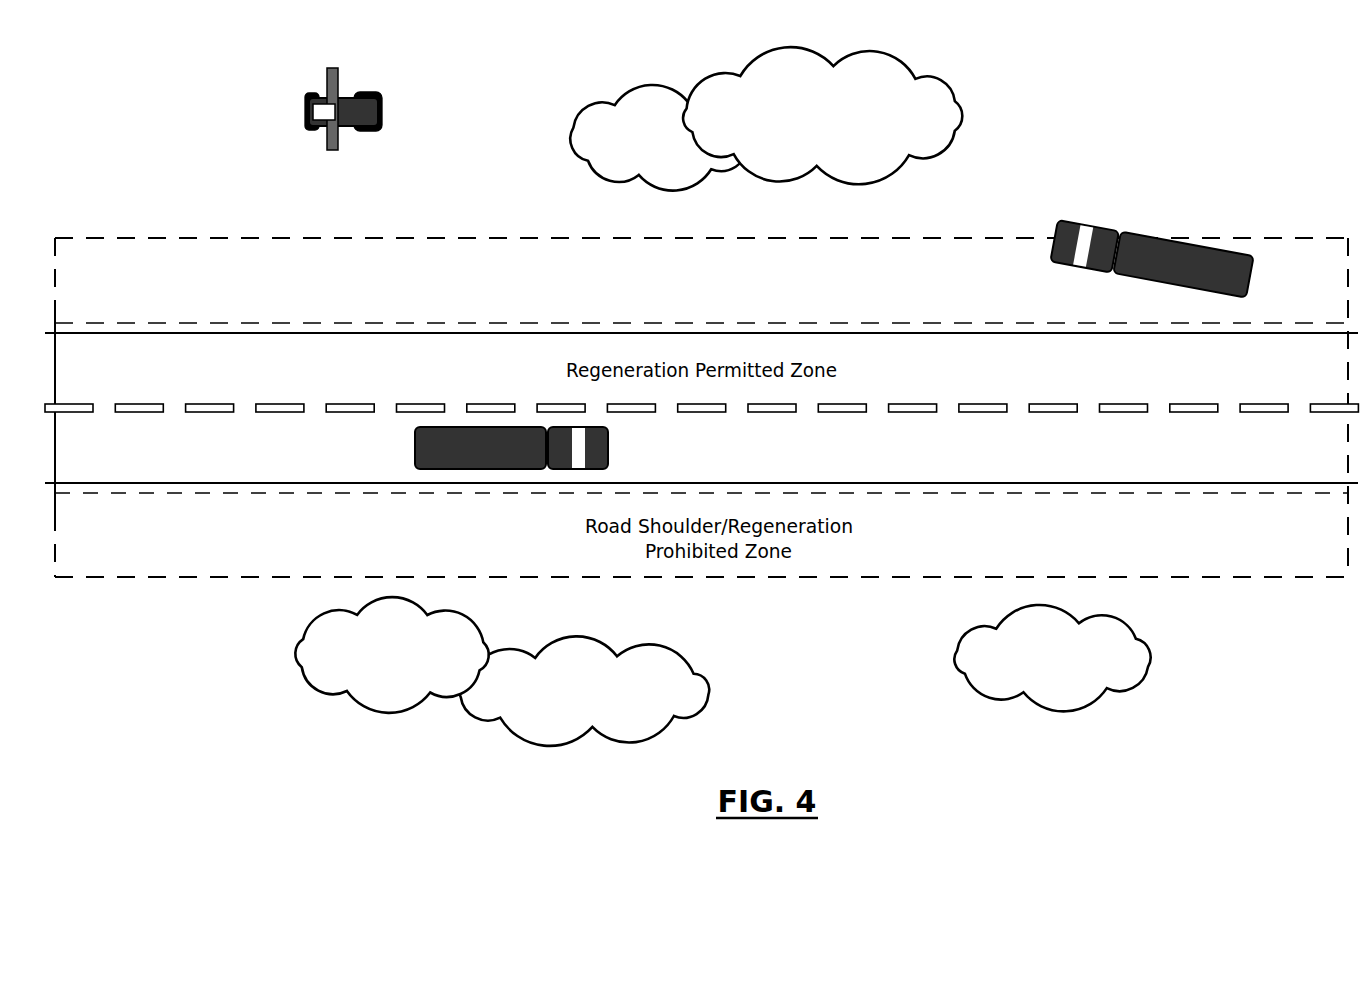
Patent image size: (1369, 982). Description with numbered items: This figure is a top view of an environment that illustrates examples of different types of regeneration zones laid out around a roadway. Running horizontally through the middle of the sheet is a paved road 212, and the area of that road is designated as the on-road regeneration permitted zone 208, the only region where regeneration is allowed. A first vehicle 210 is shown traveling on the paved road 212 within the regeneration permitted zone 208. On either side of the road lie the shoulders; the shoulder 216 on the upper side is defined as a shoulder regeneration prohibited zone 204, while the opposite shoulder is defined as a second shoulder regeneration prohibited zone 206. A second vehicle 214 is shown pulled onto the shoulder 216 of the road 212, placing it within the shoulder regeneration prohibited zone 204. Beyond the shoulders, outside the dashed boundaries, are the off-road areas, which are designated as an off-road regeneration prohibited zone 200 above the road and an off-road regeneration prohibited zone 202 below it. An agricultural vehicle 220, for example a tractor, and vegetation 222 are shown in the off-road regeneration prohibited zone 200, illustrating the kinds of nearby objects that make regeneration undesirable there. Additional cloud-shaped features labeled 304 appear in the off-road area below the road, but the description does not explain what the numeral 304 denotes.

The off-road regeneration prohibited zone 200 is at (580, 214).
The off-road regeneration prohibited zone 202 is at (622, 625).
The shoulder regeneration prohibited zone 204 is at (242, 238).
The shoulder regeneration prohibited zone 206 is at (158, 579).
The on-road regeneration permitted zone 208 is at (342, 317).
The first vehicle 210 is at (463, 427).
The paved road 212 is at (213, 331).
The second vehicle 214 is at (1155, 237).
The shoulder 216 is at (922, 304).
The agricultural vehicle 220 is at (308, 108).
The vegetation 222 is at (581, 107).
The cloud 304 is at (286, 628).